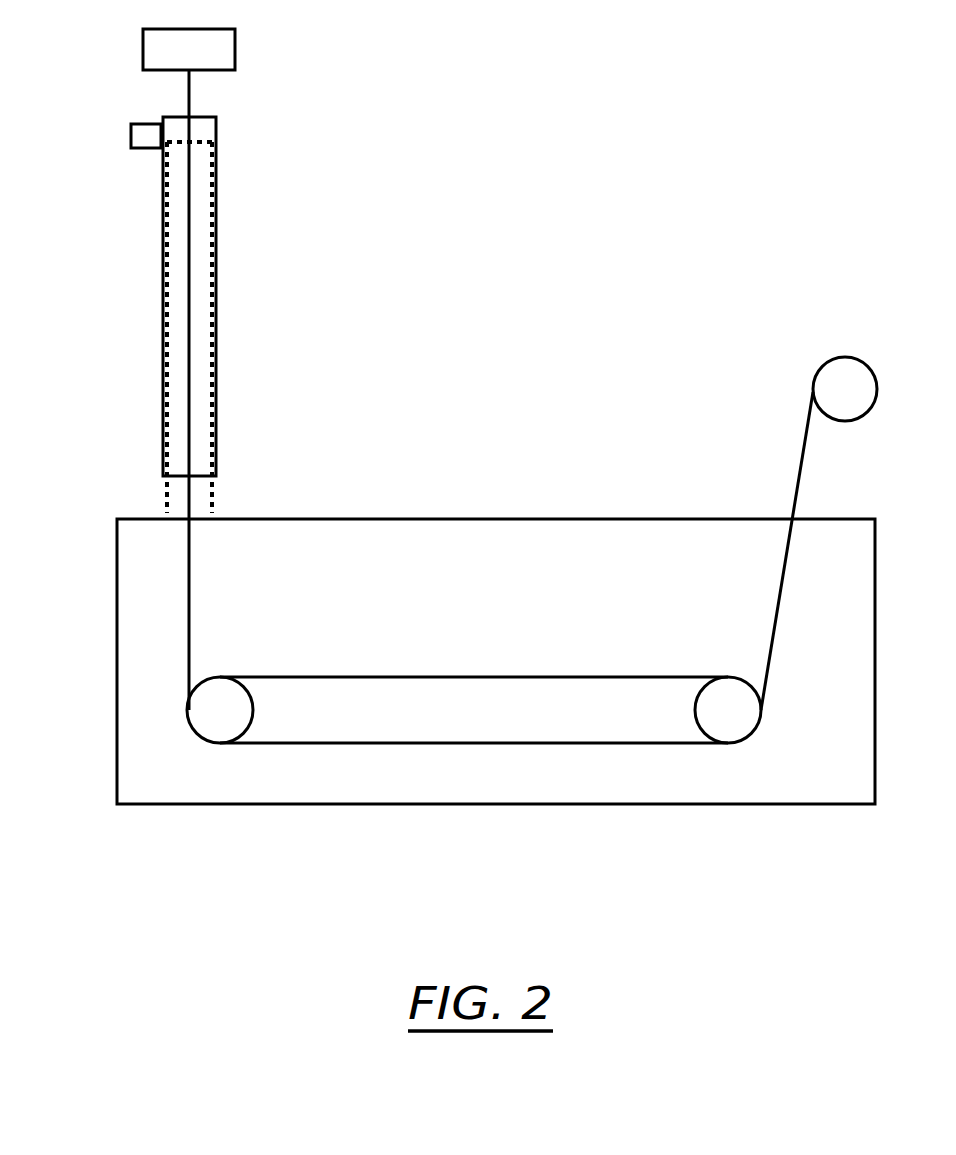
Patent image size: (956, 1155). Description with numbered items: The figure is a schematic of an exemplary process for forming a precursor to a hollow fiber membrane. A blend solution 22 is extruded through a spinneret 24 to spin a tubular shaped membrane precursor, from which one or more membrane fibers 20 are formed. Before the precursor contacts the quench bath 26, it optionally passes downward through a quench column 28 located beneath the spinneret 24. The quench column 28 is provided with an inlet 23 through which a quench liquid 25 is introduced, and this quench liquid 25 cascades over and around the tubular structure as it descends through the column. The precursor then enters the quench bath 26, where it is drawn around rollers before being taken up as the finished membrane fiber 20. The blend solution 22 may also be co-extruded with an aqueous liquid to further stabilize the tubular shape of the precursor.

The membrane fibers 20 is at (800, 463).
The blend solution 22 is at (189, 90).
The inlet 23 is at (131, 131).
The spinneret 24 is at (235, 47).
The quench liquid 25 is at (217, 378).
The quench bath 26 is at (489, 623).
The quench column 28 is at (217, 287).